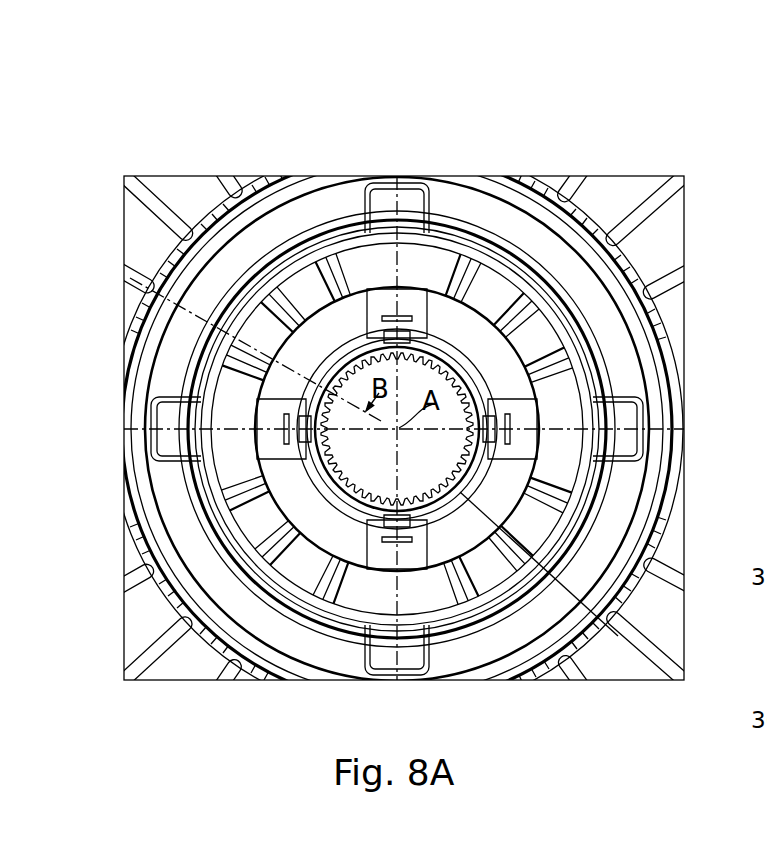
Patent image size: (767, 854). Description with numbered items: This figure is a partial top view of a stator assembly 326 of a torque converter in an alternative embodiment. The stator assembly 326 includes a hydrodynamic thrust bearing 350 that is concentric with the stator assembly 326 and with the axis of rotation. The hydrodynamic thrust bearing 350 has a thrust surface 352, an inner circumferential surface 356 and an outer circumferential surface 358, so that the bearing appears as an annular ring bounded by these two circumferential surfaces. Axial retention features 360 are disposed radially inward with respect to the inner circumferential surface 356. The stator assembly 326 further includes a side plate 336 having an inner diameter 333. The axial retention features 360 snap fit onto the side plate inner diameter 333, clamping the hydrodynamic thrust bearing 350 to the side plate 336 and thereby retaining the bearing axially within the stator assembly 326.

The stator assembly 326 is at (170, 121).
The side plate inner diameter 333 is at (618, 636).
The side plate 336 is at (200, 232).
The hydrodynamic thrust bearing 350 is at (478, 348).
The thrust surface 352 is at (212, 458).
The inner circumferential surface 356 is at (307, 333).
The outer circumferential surface 358 is at (323, 317).
The axial retention features 360 is at (420, 303).